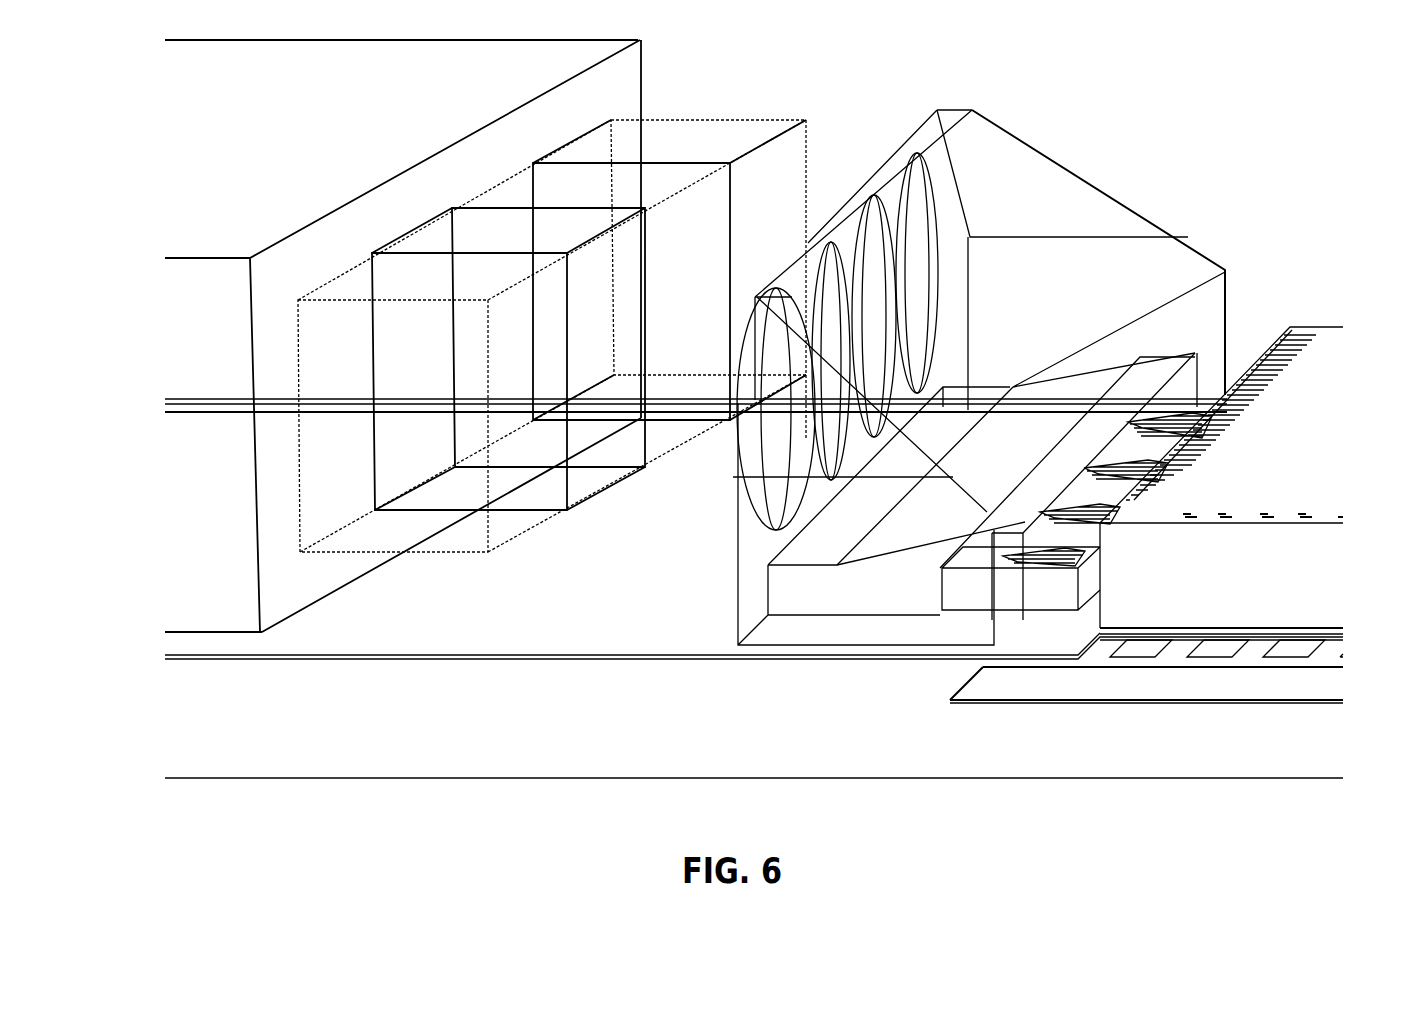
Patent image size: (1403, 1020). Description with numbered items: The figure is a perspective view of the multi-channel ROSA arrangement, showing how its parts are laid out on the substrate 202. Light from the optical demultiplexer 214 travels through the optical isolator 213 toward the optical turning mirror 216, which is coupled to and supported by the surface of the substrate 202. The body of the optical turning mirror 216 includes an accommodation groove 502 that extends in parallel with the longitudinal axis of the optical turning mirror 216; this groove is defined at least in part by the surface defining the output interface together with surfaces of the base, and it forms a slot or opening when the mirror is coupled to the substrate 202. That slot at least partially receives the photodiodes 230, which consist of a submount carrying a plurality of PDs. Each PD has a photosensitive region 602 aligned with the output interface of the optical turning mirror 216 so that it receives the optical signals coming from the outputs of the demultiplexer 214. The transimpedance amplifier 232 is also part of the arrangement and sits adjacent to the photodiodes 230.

The substrate 202 is at (754, 705).
The optical isolator 213 is at (771, 128).
The optical demultiplexer 214 is at (403, 336).
The optical turning mirror 216 is at (1153, 180).
The photodetectors 230 is at (1021, 578).
The transimpedance amplifier 232 is at (1221, 492).
The accommodation groove 502 is at (913, 605).
The photosensitive region 602 is at (1133, 418).